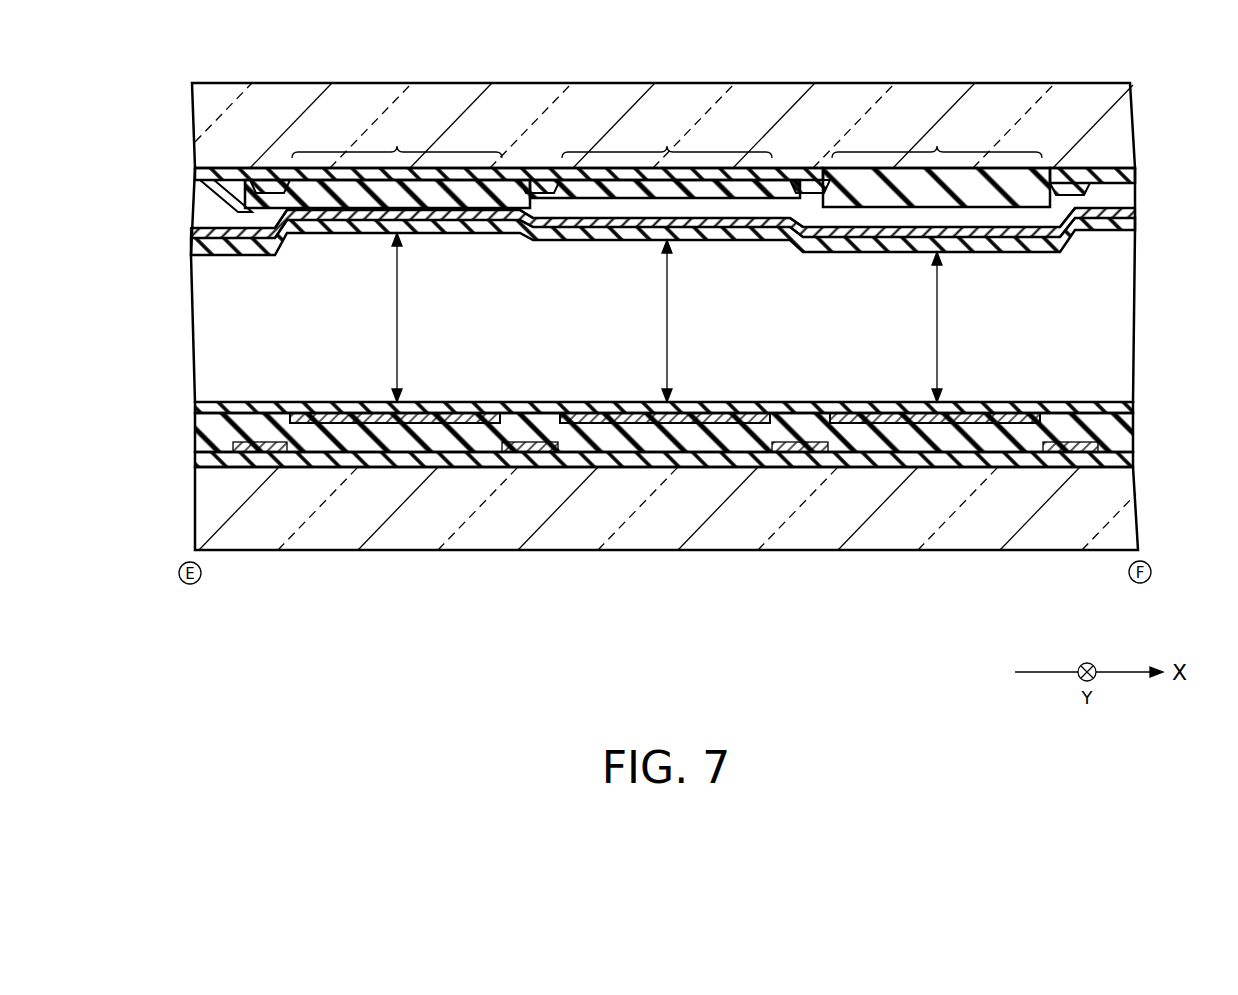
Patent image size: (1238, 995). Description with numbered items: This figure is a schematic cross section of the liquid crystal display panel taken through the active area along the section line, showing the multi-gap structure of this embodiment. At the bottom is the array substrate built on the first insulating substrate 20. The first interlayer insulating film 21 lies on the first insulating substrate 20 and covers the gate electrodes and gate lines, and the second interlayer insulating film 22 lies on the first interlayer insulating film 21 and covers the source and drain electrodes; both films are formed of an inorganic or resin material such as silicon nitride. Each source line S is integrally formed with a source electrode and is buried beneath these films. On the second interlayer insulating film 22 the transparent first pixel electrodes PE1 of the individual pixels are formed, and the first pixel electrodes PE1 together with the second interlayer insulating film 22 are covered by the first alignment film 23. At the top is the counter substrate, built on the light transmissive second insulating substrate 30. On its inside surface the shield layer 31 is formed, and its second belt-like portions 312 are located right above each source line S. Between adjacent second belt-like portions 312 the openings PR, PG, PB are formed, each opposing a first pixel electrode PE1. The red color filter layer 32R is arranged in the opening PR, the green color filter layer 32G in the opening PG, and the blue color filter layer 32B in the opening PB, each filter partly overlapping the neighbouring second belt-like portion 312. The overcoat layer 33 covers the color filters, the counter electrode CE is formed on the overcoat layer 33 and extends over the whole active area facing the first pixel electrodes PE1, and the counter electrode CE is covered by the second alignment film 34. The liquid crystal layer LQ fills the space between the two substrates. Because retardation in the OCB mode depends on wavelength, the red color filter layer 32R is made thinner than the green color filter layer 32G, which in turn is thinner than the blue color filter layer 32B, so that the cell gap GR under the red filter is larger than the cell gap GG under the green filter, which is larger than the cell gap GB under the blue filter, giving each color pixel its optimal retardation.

The second belt-like portion 312 is at (270, 168).
The second insulating substrate 30 is at (1133, 118).
The shield layer 31 is at (1137, 170).
The red color filter layer 32R is at (345, 183).
The green color filter layer 32G is at (628, 200).
The blue color filter layer 32B is at (893, 208).
The overcoat layer 33 is at (1137, 183).
The counter electrode CE is at (1137, 210).
The second alignment film 34 is at (1137, 236).
The liquid crystal layer LQ is at (1135, 303).
The cell gap GR is at (414, 317).
The cell gap GG is at (685, 321).
The cell gap GB is at (954, 327).
The opening PR is at (397, 137).
The opening PG is at (667, 137).
The opening PB is at (937, 137).
The first alignment film 23 is at (1137, 405).
The second interlayer insulating film 22 is at (1137, 432).
The first interlayer insulating film 21 is at (1137, 458).
The first insulating substrate 20 is at (1137, 511).
The source line S is at (258, 453).
The first pixel electrode PE1 is at (395, 424).